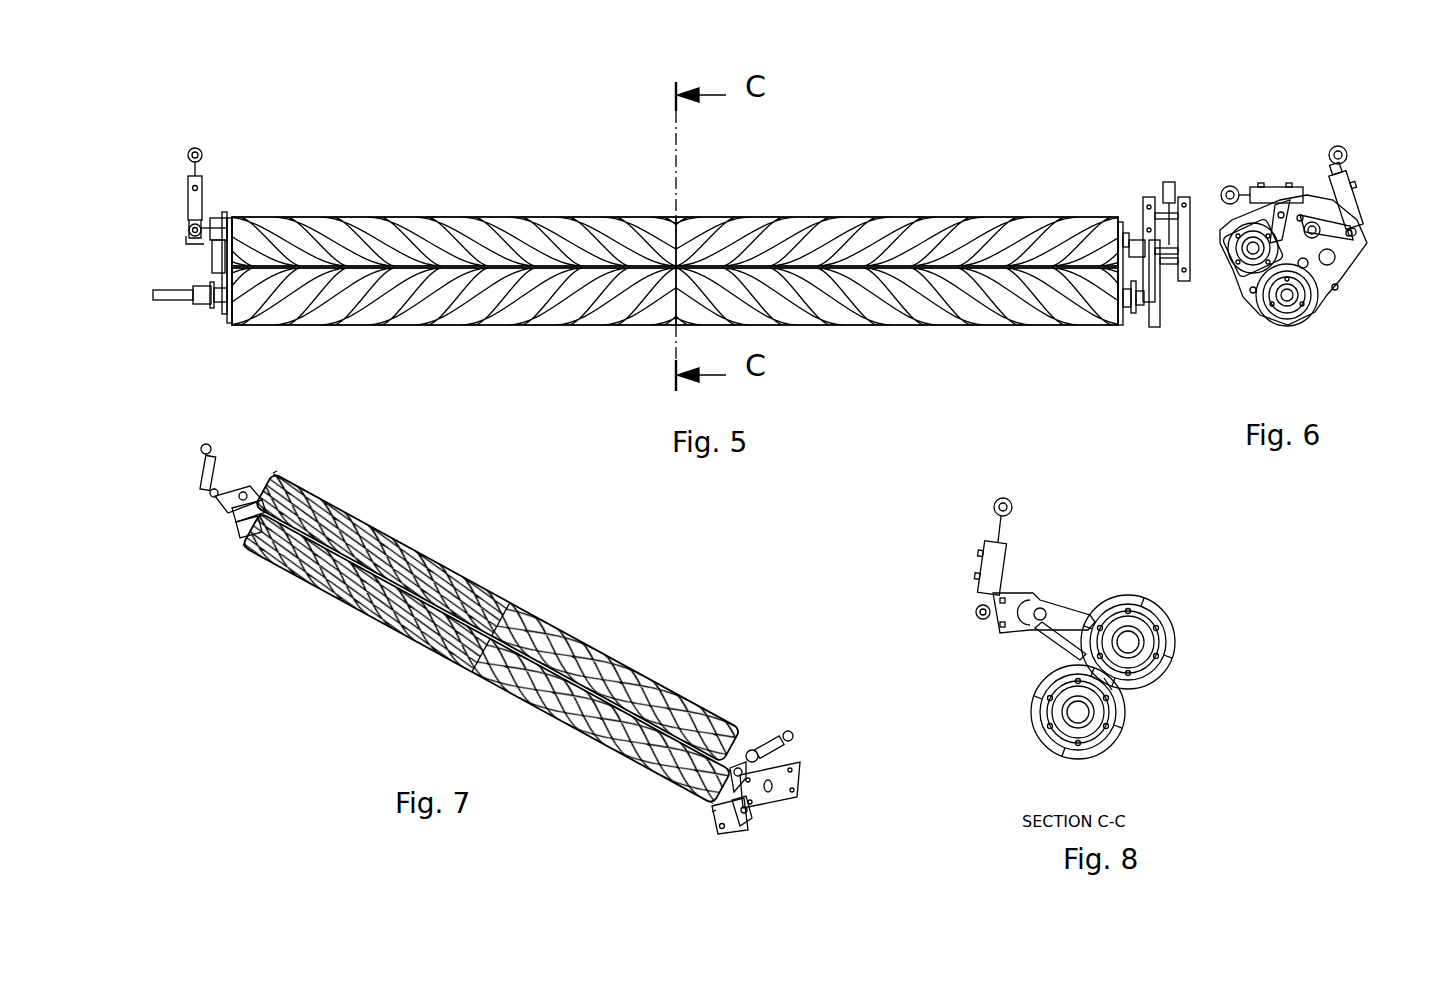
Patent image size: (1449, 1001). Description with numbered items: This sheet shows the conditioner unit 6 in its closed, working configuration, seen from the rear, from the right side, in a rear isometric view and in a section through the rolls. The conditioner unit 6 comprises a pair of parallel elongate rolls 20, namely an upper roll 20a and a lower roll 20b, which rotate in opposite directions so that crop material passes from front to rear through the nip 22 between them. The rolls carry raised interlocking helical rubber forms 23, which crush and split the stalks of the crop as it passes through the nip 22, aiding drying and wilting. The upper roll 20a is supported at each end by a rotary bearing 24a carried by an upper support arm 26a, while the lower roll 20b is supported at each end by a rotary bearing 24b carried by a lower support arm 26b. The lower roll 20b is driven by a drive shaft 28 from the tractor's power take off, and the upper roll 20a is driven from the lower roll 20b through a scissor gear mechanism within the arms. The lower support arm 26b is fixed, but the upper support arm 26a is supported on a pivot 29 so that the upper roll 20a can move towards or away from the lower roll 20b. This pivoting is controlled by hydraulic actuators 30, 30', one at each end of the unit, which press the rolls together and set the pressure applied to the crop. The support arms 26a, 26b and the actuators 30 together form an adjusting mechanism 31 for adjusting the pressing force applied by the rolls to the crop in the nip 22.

In FIG. 5, the conditioner unit 6 is at (988, 112).
In FIG. 5, the pair of parallel elongate rolls 20 is at (344, 186).
In FIG. 5, the upper roll 20a is at (400, 240).
In FIG. 6, the upper roll 20a is at (1242, 238).
In FIG. 7, the upper roll 20a is at (585, 652).
In FIG. 8, the upper roll 20a is at (1132, 598).
In FIG. 5, the lower roll 20b is at (390, 300).
In FIG. 6, the lower roll 20b is at (1300, 322).
In FIG. 7, the lower roll 20b is at (610, 765).
In FIG. 8, the lower roll 20b is at (1060, 752).
In FIG. 8, the nip 22 is at (1145, 705).
In FIG. 5, the forms or formations 23 is at (831, 217).
In FIG. 8, the forms or formations 23 is at (1178, 641).
In FIG. 7, the rotary bearing 24a is at (782, 793).
In FIG. 7, the rotary bearing 24b is at (746, 846).
In FIG. 6, the upper support arm 26a is at (1293, 210).
In FIG. 7, the upper support arm 26a is at (792, 780).
In FIG. 8, the upper support arm 26a is at (1075, 616).
In FIG. 6, the lower support arm 26b is at (1345, 265).
In FIG. 7, the lower support arm 26b is at (756, 816).
In FIG. 5, the drive shaft 28 is at (180, 300).
In FIG. 7, the drive shaft 28 is at (240, 522).
In FIG. 8, the pivot 29 is at (1036, 626).
In FIG. 6, the hydraulic actuator 30 is at (1262, 150).
In FIG. 7, the hydraulic actuator 30 is at (782, 715).
In FIG. 5, the hydraulic actuator 30' is at (169, 196).
In FIG. 6, the hydraulic actuator 30' is at (1383, 191).
In FIG. 7, the hydraulic actuator 30' is at (183, 485).
In FIG. 8, the hydraulic actuator 30' is at (955, 558).
In FIG. 7, the adjusting mechanism 31 is at (248, 440).